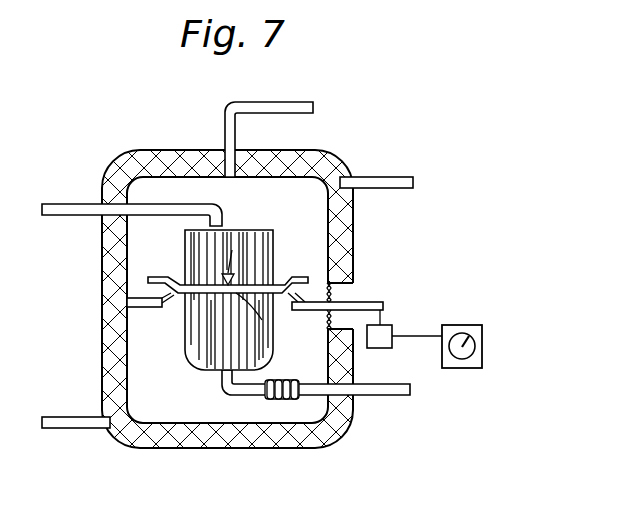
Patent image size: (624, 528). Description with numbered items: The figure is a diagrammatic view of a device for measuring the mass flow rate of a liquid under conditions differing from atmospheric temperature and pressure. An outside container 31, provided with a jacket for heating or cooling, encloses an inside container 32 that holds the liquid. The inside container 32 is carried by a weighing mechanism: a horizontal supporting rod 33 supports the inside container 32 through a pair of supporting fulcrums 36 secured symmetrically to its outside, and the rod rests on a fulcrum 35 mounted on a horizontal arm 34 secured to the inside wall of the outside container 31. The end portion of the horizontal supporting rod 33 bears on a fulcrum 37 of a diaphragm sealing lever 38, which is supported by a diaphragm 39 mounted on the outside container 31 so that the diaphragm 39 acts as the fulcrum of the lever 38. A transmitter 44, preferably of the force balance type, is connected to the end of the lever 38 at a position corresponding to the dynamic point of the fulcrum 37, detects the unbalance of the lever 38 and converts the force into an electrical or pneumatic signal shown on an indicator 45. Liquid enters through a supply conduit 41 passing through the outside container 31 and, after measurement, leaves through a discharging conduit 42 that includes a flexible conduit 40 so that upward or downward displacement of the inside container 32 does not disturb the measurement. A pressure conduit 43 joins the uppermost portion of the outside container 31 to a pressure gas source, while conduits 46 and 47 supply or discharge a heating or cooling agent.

The outside container 31 is at (328, 168).
The inside container 32 is at (205, 355).
The horizontal supporting rod 33 is at (262, 320).
The horizontal arm 34 is at (148, 307).
The fulcrum 35 is at (152, 277).
The supporting fulcrums 36 is at (232, 250).
The fulcrum 37 is at (299, 284).
The diaphragm sealing lever 38 is at (355, 302).
The diaphragm 39 is at (326, 326).
The flexible conduit 40 is at (263, 396).
The supply conduit 41 is at (60, 216).
The discharging conduit 42 is at (392, 396).
The pressure conduit 43 is at (298, 103).
The transmitter 44 is at (378, 348).
The indicator 45 is at (483, 343).
The conduit 46 is at (60, 417).
The conduit 47 is at (401, 178).